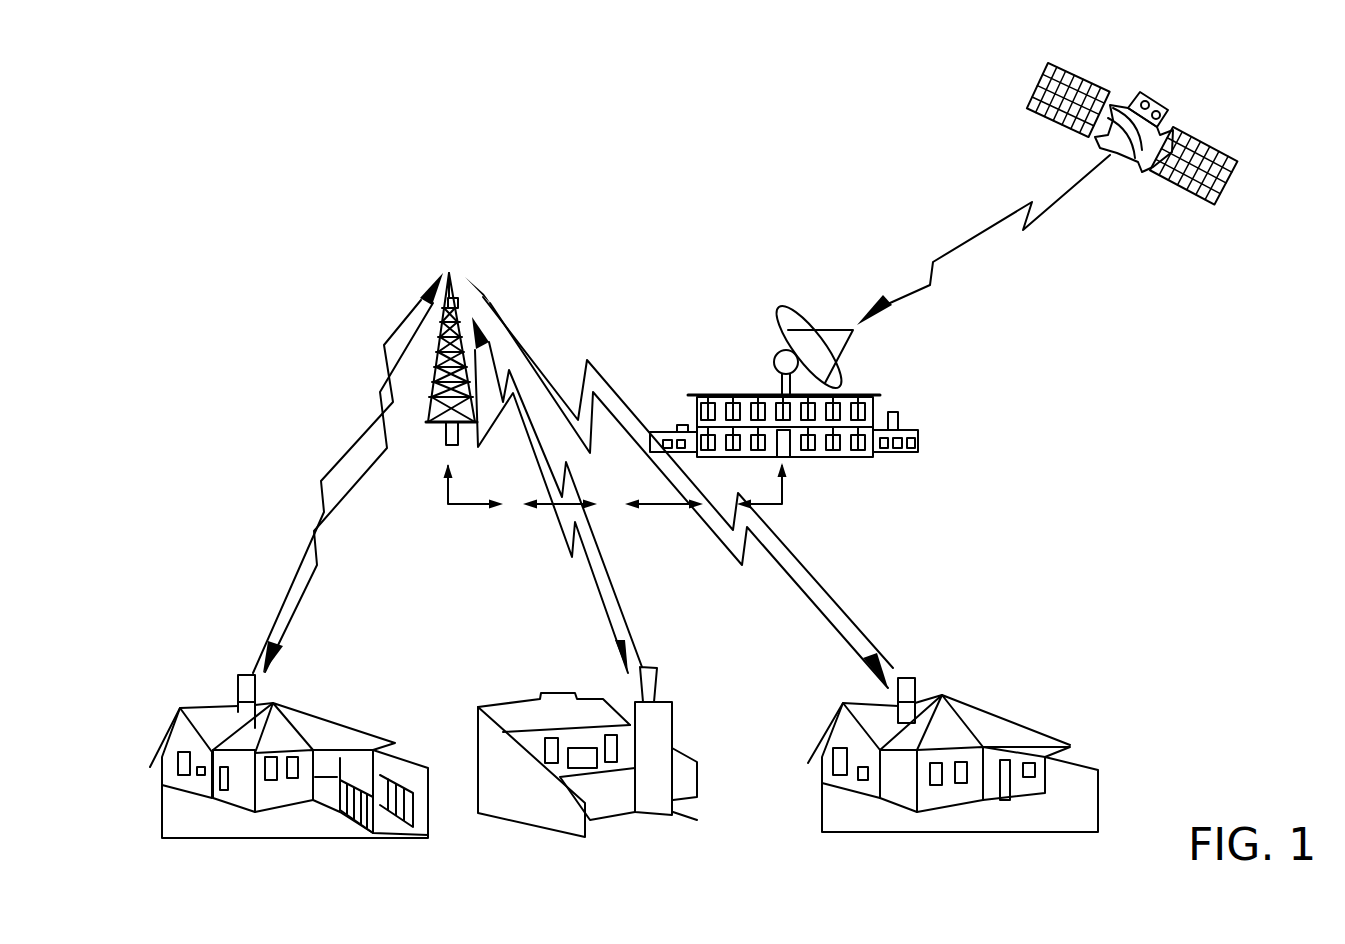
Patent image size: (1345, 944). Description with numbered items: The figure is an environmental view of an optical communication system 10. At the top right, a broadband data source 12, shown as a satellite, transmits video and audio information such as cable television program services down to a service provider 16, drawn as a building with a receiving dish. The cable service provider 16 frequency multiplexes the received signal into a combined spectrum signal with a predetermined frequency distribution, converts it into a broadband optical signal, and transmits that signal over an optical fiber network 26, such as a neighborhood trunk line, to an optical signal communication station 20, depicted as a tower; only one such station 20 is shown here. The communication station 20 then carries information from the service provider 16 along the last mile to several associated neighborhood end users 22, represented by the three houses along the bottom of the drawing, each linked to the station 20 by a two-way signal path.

The optical communication system 10 is at (300, 222).
The broadband data source 12 is at (1073, 65).
The service provider 16 is at (915, 414).
The optical signal communication station 20 is at (410, 278).
The neighborhood end users 22 is at (312, 840).
The optical fiber network 26 is at (648, 520).